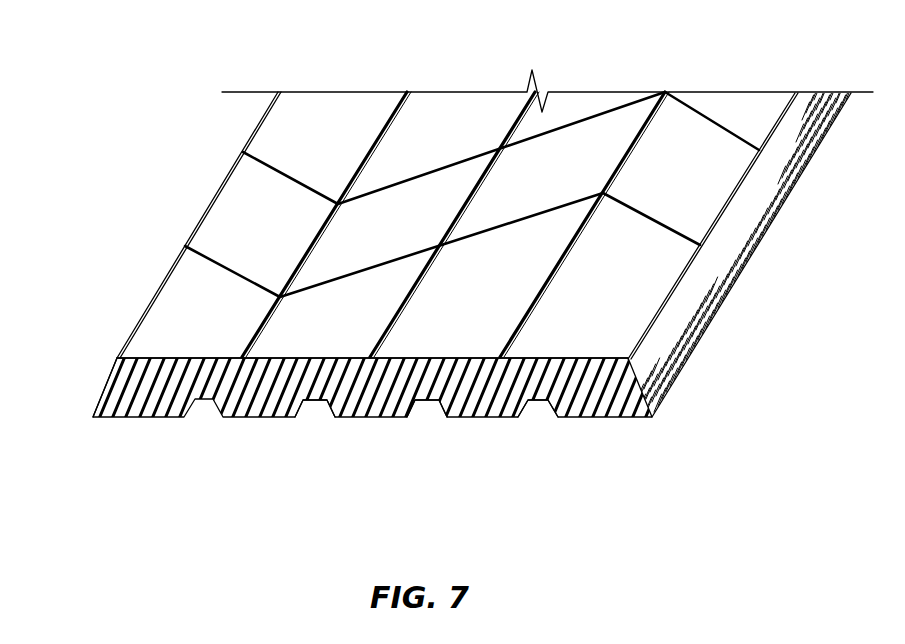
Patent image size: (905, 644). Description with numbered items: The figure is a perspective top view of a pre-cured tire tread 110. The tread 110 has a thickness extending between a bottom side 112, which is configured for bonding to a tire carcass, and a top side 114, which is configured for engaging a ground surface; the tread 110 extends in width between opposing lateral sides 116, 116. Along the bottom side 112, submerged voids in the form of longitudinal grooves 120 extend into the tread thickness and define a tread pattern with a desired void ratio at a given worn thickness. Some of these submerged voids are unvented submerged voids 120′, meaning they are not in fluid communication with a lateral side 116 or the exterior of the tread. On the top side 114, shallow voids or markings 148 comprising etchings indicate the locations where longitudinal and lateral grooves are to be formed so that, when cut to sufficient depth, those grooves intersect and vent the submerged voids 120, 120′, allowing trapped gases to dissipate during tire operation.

The tire tread 110 is at (150, 74).
The bottom side 112 is at (127, 417).
The top side 114 is at (617, 299).
The lateral sides 116 is at (768, 197).
The longitudinal grooves 120 is at (528, 402).
The unvented submerged voids 120′ is at (307, 402).
The shallow voids or markings 148 is at (625, 107).